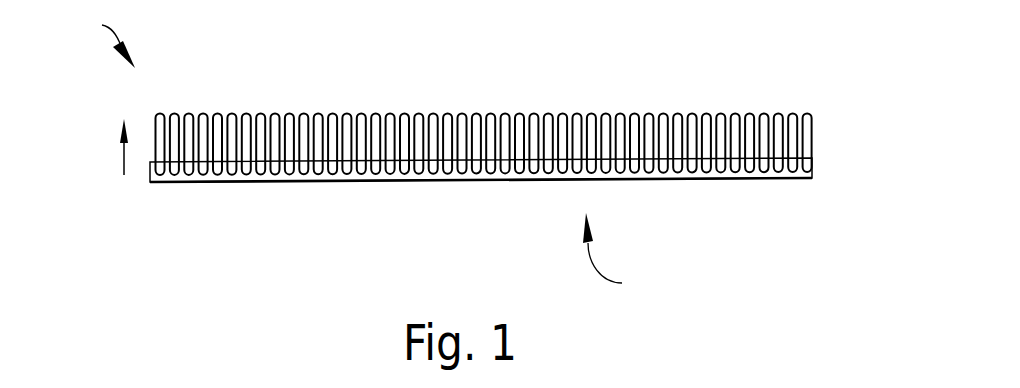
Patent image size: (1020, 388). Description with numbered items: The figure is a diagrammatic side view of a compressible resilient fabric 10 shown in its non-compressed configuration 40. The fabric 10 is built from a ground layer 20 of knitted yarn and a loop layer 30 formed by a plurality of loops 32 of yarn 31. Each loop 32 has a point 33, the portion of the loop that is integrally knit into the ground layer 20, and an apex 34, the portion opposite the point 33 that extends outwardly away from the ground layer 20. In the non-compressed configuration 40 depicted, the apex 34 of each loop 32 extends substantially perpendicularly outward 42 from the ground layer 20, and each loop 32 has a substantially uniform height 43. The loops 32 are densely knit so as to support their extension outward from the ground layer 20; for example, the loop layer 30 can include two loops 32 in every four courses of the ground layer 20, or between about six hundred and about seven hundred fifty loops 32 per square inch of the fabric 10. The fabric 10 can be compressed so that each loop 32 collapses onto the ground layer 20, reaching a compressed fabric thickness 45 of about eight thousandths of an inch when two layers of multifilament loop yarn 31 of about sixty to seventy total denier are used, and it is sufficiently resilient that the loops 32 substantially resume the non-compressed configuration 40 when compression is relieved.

The compressible resilient fabric 10 is at (105, 41).
The ground layer 20 is at (707, 182).
The loop layer 30 is at (421, 146).
The yarn 31 is at (433, 115).
The loop 32 is at (619, 113).
The point 33 is at (432, 168).
The apex 34 is at (275, 114).
The non-compressed configuration 40 is at (618, 252).
The outward direction 42 is at (120, 168).
The uniform height 43 is at (92, 162).
The compressed fabric thickness 45 is at (816, 178).